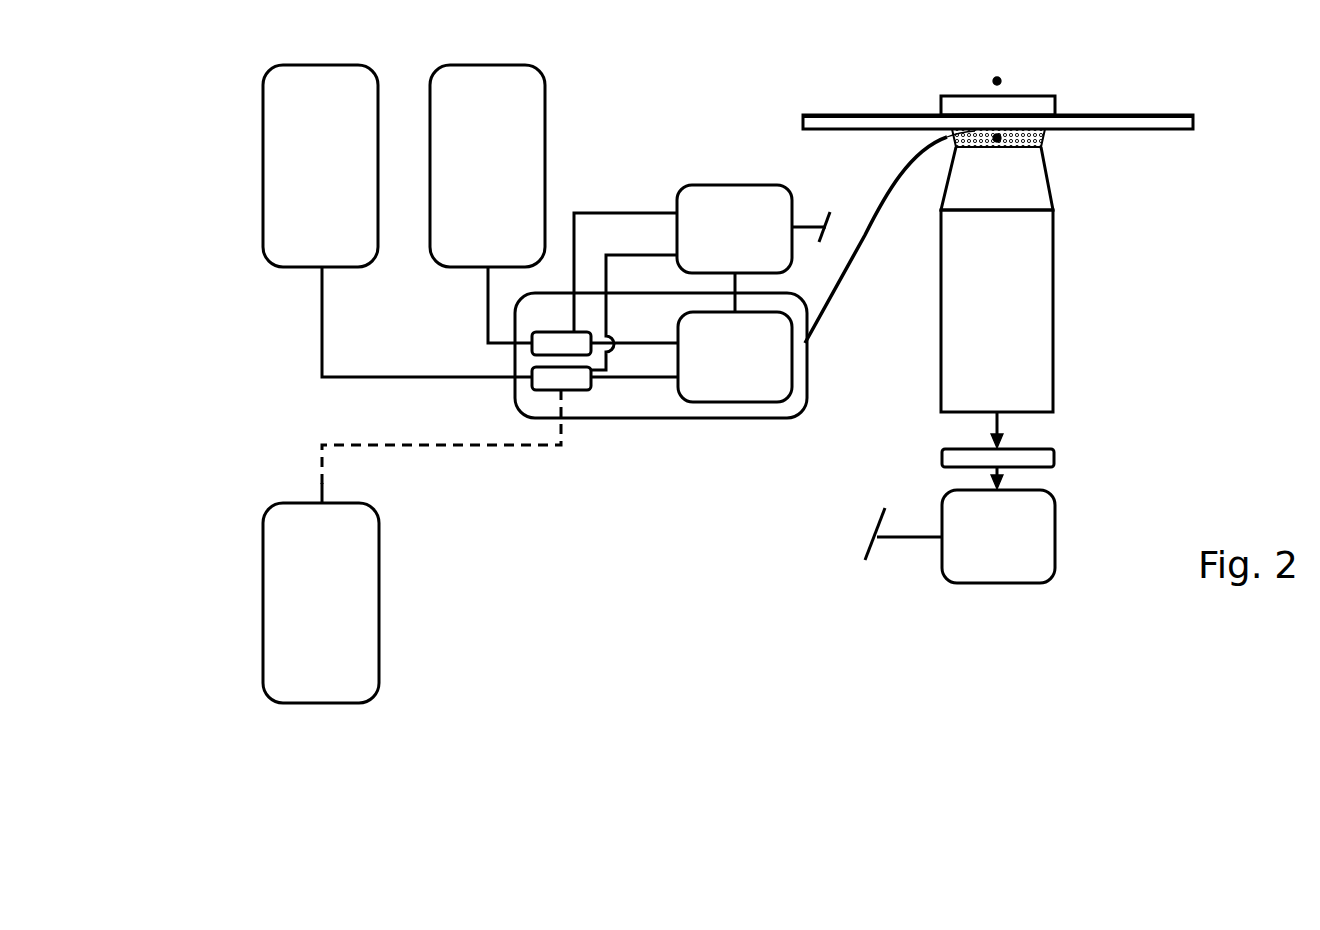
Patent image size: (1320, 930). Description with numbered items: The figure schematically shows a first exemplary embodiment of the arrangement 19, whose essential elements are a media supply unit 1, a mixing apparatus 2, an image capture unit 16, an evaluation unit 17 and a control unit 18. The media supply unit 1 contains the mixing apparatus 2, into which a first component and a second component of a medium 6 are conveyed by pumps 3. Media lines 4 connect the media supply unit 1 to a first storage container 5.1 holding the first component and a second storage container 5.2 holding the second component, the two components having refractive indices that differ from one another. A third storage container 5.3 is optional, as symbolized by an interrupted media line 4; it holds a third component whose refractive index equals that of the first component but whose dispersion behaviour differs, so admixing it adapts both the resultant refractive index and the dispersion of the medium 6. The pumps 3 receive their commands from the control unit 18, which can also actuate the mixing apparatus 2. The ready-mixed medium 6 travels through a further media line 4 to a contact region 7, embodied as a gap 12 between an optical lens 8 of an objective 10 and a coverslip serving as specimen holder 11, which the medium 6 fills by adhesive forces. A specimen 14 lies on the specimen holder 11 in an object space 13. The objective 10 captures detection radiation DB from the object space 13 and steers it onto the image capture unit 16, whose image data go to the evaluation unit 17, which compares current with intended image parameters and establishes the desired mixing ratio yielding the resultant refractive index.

The media supply unit 1 is at (621, 418).
The mixing apparatus 2 is at (735, 357).
The pumps 3 is at (532, 345).
The media lines 4 is at (323, 327).
The first storage container 5.1 is at (263, 175).
The second storage container 5.2 is at (545, 177).
The third storage container 5.3 is at (263, 615).
The medium 6 is at (1045, 143).
The contact region 7 is at (950, 132).
The optical lens 8 is at (1050, 200).
The objective 10 is at (1054, 290).
The specimen holder 11 is at (1193, 122).
The gap 12 is at (1062, 137).
The object space 13 is at (1001, 80).
The specimen 14 is at (970, 95).
The image capture unit 16 is at (1056, 456).
The evaluation unit 17 is at (960, 536).
The control unit 18 is at (702, 277).
The microscope arrangement 19 is at (720, 64).
The detection radiation DB is at (998, 430).